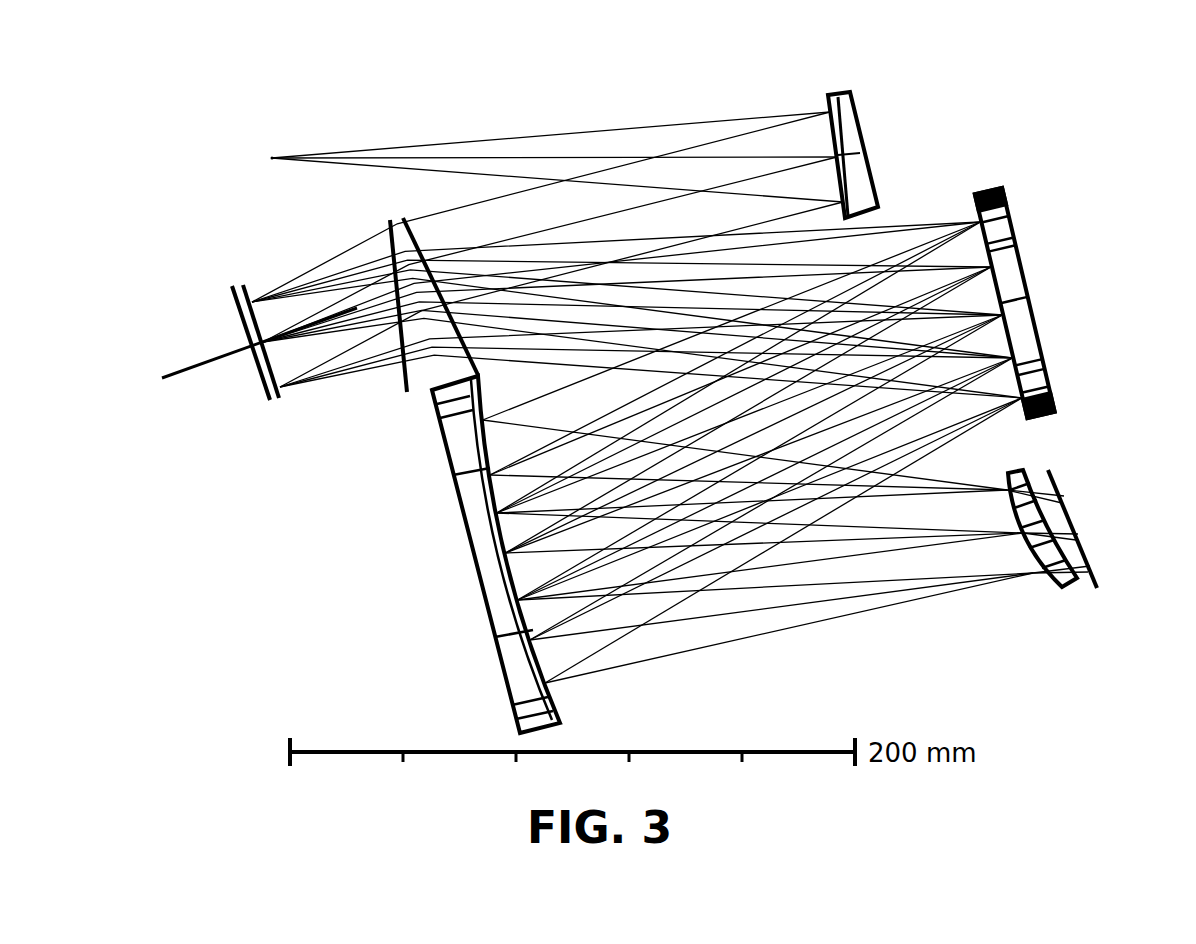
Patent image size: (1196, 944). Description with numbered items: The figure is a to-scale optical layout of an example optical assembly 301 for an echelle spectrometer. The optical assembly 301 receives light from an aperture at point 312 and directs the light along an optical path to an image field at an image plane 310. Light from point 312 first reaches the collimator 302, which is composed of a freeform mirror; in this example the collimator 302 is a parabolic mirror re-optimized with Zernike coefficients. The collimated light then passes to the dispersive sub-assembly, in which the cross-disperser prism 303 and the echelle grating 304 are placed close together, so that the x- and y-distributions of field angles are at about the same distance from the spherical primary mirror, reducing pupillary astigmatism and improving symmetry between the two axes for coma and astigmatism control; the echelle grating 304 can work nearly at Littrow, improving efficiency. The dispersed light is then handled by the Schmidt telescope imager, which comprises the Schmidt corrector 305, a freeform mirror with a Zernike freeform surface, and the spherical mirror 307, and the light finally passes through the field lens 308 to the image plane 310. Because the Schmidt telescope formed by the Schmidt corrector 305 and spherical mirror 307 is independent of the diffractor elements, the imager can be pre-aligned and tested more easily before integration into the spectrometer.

The optical assembly 301 is at (238, 610).
The collimator 302 is at (860, 123).
The prism 303 is at (407, 392).
The echelle grating 304 is at (230, 306).
The Schmidt corrector 305 is at (1013, 242).
The spherical mirror 307 is at (562, 719).
The field lens 308 is at (1017, 473).
The image plane 310 is at (1092, 577).
The point 312 is at (272, 156).